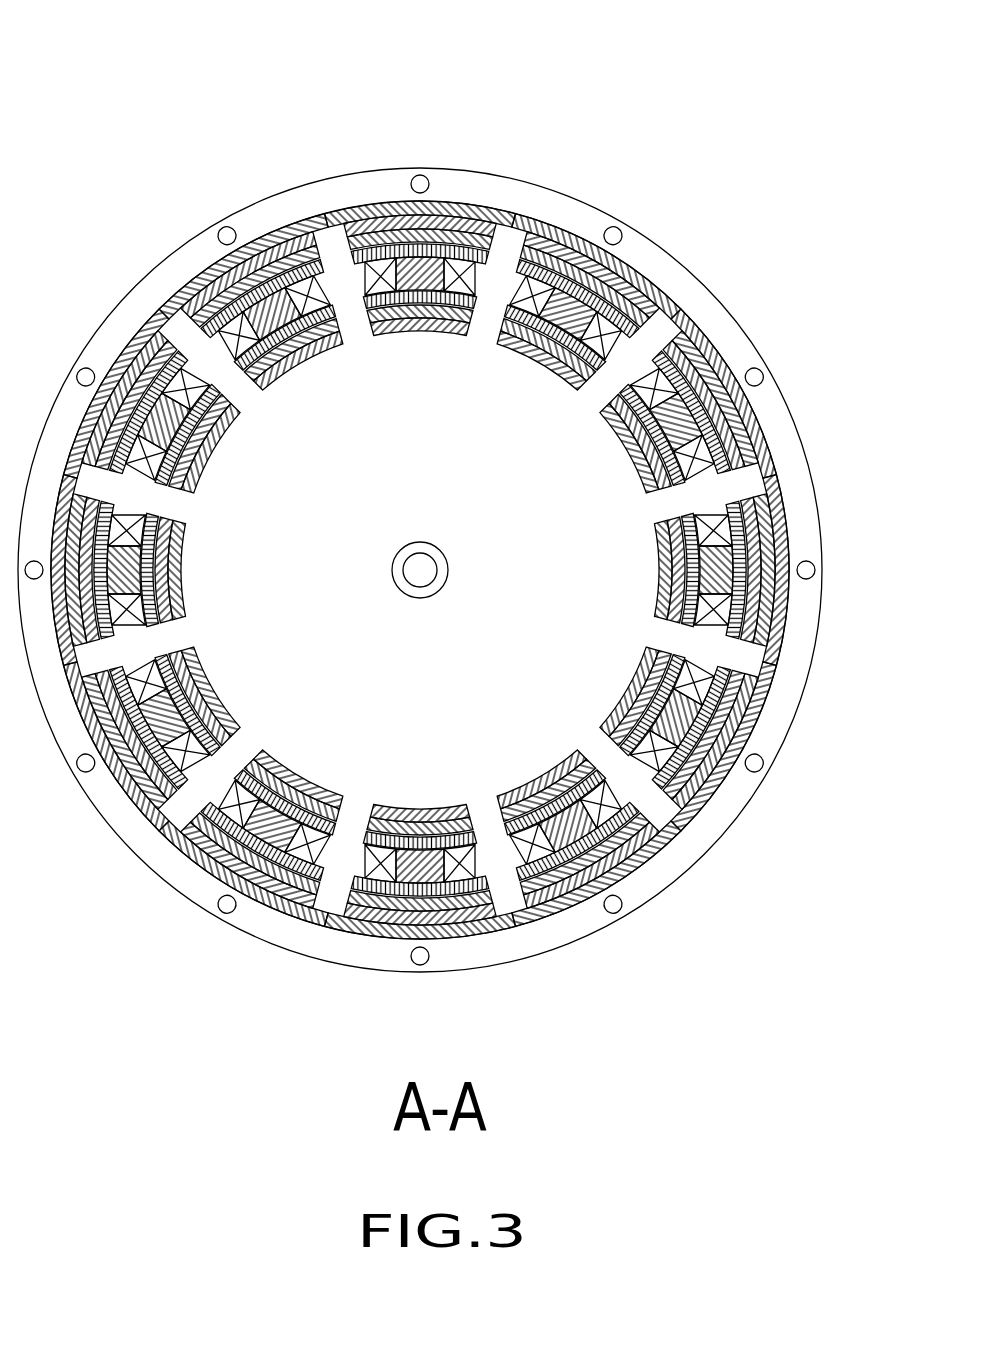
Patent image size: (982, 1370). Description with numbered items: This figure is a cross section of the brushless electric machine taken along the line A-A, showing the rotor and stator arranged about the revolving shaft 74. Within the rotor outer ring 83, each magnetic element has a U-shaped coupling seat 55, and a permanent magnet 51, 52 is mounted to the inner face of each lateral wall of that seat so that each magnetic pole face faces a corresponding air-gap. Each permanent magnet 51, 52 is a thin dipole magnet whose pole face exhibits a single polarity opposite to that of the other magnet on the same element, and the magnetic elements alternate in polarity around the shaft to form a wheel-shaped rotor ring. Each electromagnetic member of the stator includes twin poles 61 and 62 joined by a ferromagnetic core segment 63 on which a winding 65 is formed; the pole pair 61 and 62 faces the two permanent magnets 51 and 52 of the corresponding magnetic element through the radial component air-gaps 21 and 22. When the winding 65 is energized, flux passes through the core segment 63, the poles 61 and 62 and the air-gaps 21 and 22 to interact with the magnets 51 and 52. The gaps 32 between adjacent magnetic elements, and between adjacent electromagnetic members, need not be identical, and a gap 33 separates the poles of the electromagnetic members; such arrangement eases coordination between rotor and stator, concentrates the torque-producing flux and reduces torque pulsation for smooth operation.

The radial component air-gap 21 is at (650, 317).
The radial component air-gap 22 is at (605, 368).
The gap between adjacent magnetic elements 32 is at (332, 237).
The gap between poles of electromagnetic members 33 is at (212, 362).
The permanent magnet of magnetic element 51 is at (572, 257).
The permanent magnet of magnetic element 52 is at (520, 320).
The coupling seat of magnetic element 55 is at (505, 335).
The pole of electromagnetic member 61 is at (617, 268).
The pole of electromagnetic member 62 is at (545, 315).
The core segment of electromagnetic member 63 is at (578, 318).
The winding of electromagnetic member 65 is at (592, 325).
The revolving shaft 74 is at (444, 583).
The rotor outer ring 83 is at (510, 200).